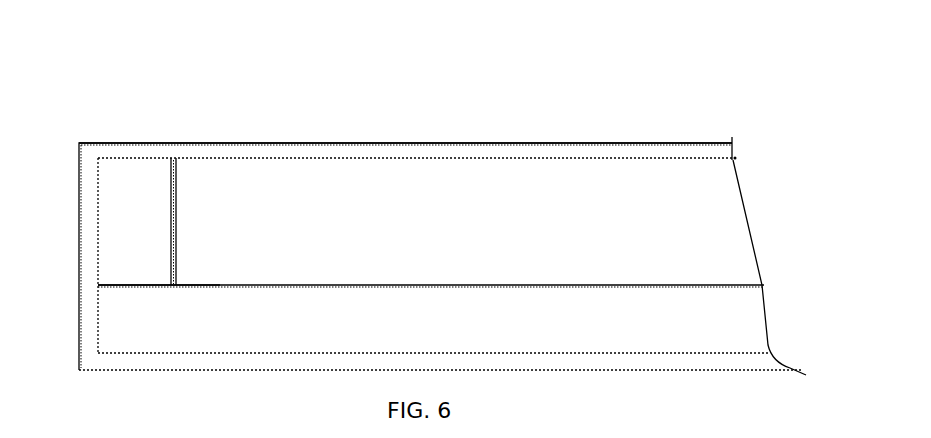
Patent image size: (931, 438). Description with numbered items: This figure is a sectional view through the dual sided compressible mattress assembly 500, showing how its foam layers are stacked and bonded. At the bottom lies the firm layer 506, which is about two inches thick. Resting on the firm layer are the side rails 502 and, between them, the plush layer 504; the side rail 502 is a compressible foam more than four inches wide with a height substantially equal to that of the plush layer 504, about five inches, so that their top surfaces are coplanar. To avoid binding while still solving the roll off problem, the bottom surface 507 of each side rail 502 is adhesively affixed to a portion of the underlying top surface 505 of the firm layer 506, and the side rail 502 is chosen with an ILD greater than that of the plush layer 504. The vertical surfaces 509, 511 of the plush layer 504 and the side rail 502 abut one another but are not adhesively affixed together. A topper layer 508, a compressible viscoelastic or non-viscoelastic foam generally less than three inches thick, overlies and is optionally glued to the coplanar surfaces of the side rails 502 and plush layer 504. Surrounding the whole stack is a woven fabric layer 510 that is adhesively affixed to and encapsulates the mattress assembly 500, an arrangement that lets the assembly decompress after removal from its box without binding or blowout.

The compressible mattress assembly 500 is at (98, 33).
The side rail 502 is at (151, 227).
The plush layer 504 is at (441, 227).
The top surface of the firm layer 505 is at (122, 281).
The firm layer 506 is at (441, 333).
The bottom surface of the side rail 507 is at (146, 294).
The topper layer 508 is at (542, 154).
The vertical surface of the plush layer 509 is at (186, 198).
The woven fabric layer 510 is at (324, 142).
The vertical surface of the side rail 511 is at (165, 181).